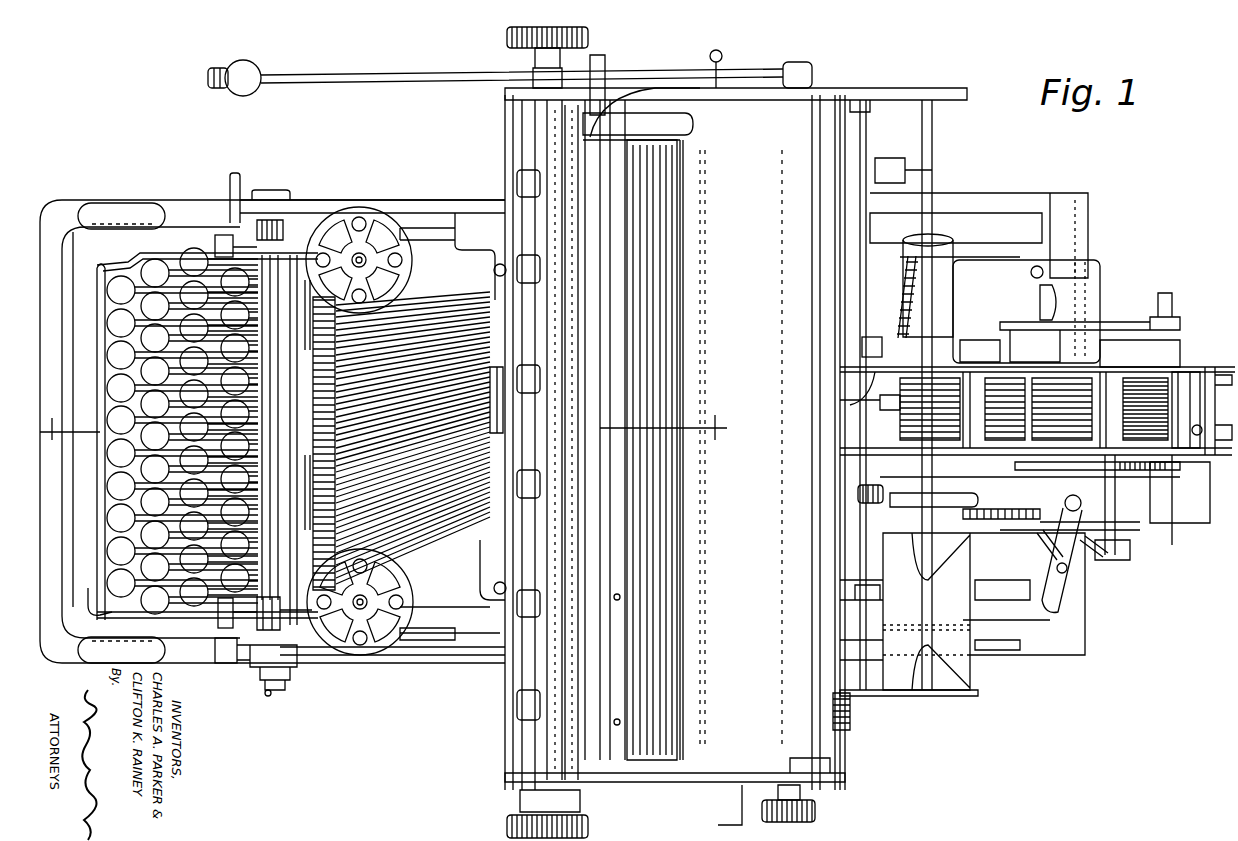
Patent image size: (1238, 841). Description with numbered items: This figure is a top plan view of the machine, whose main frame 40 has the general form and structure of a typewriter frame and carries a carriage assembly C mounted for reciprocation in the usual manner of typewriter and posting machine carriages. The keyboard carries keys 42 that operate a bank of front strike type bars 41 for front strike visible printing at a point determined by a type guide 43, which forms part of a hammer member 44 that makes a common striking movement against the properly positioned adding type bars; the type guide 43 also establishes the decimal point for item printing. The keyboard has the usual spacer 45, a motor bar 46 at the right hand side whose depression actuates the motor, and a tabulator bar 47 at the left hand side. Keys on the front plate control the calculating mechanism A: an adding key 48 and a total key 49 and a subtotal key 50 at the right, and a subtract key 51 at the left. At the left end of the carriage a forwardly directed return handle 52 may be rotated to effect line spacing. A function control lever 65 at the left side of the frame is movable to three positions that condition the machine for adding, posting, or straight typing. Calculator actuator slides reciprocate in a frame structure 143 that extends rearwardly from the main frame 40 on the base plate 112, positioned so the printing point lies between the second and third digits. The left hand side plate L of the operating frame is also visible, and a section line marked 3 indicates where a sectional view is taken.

The main frame 40 is at (342, 658).
The front strike type bars 41 is at (322, 522).
The keys 42 is at (100, 494).
The type guide 43 is at (493, 367).
The hammer member 44 is at (380, 550).
The spacer 45 is at (88, 604).
The motor bar 46 is at (132, 656).
The tabulator bar 47 is at (108, 212).
The adding key 48 is at (218, 616).
The total key 49 is at (228, 660).
The subtotal key 50 is at (250, 472).
The subtract key 51 is at (225, 235).
The return handle 52 is at (341, 78).
The function control lever 65 is at (233, 184).
The base plate 112 is at (1003, 203).
The frame structure 143 is at (850, 405).
The left hand side plate L is at (945, 325).
The calculating mechanism A is at (1137, 510).
The carriage assembly C is at (741, 432).
The section line 3- 3 is at (383, 439).